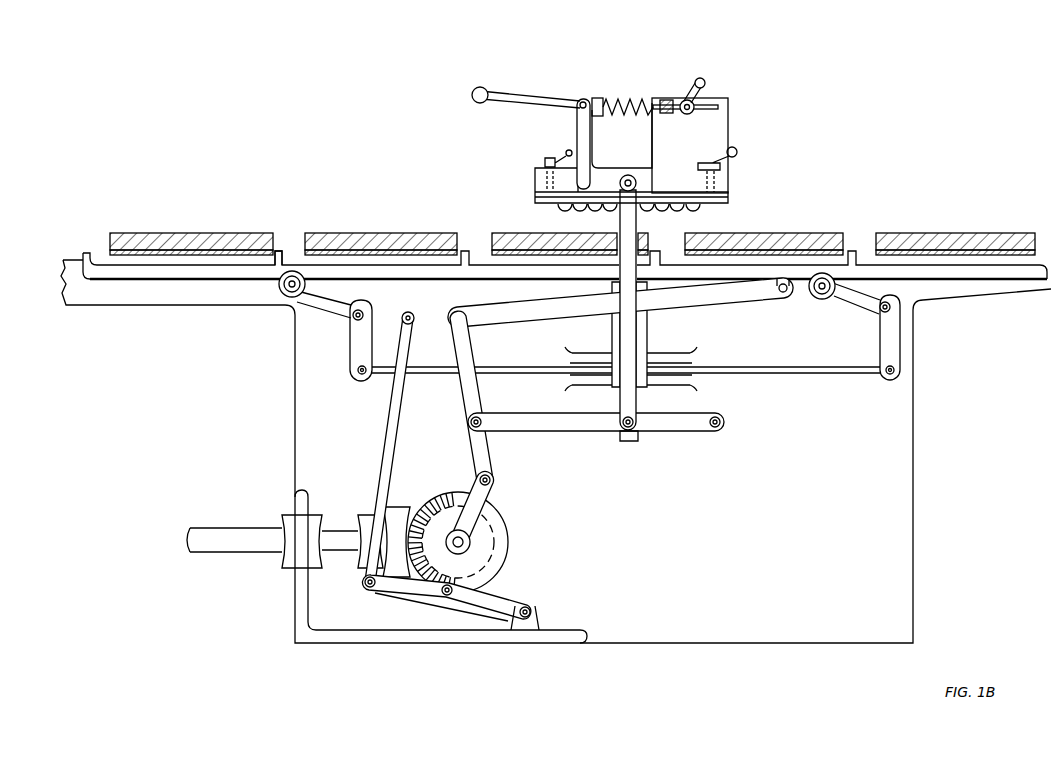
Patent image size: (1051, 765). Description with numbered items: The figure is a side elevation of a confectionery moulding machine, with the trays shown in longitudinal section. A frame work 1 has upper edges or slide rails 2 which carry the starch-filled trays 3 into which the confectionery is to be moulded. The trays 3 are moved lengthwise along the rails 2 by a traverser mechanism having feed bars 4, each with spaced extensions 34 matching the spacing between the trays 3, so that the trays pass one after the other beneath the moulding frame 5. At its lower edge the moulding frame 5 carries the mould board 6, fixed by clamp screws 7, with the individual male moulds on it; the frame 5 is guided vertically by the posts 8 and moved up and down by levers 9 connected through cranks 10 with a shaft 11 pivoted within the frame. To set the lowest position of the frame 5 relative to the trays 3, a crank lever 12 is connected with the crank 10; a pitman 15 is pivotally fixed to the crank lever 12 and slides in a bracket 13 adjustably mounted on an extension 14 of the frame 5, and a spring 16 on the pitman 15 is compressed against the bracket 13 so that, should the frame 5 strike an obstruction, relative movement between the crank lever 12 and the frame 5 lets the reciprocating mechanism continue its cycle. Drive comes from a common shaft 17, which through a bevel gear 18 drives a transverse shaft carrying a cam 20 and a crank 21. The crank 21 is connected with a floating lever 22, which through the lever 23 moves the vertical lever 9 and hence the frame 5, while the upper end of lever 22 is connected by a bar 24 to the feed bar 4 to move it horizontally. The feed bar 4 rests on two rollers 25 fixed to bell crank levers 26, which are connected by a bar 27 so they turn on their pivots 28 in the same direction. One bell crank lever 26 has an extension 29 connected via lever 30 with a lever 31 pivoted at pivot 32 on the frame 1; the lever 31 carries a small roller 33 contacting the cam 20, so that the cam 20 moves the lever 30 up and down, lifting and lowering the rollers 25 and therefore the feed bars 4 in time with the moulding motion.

The frame work 1 is at (912, 396).
The slide rails 2 is at (570, 280).
The starch-filled trays 3 is at (1007, 235).
The feed bars 4 is at (1038, 292).
The moulding frame 5 is at (725, 177).
The mould board 6 is at (726, 204).
The clamp screws 7 is at (547, 160).
The posts 8 is at (637, 222).
The levers 9 is at (638, 333).
The cranks 10 is at (636, 183).
The shaft 11 is at (579, 183).
The crank lever 12 is at (593, 153).
The bracket 13 is at (683, 98).
The extension 14 is at (729, 132).
The pitman 15 is at (597, 98).
The spring 16 is at (618, 97).
The common shaft 17 is at (216, 534).
The bevel gear 18 is at (447, 497).
The cam 20 is at (466, 577).
The crank 21 is at (495, 492).
The floating lever 22 is at (494, 457).
The lever 23 is at (567, 432).
The bar 24 is at (515, 309).
The rollers 25 is at (279, 288).
The bell crank levers 26 is at (330, 318).
The bar 27 is at (530, 375).
The pivots 28 is at (356, 309).
The extension 29 is at (405, 313).
The lever 30 is at (397, 449).
The lever 31 is at (408, 595).
The pivot 32 is at (533, 611).
The small roller 33 is at (444, 597).
The extensions 34 is at (278, 249).